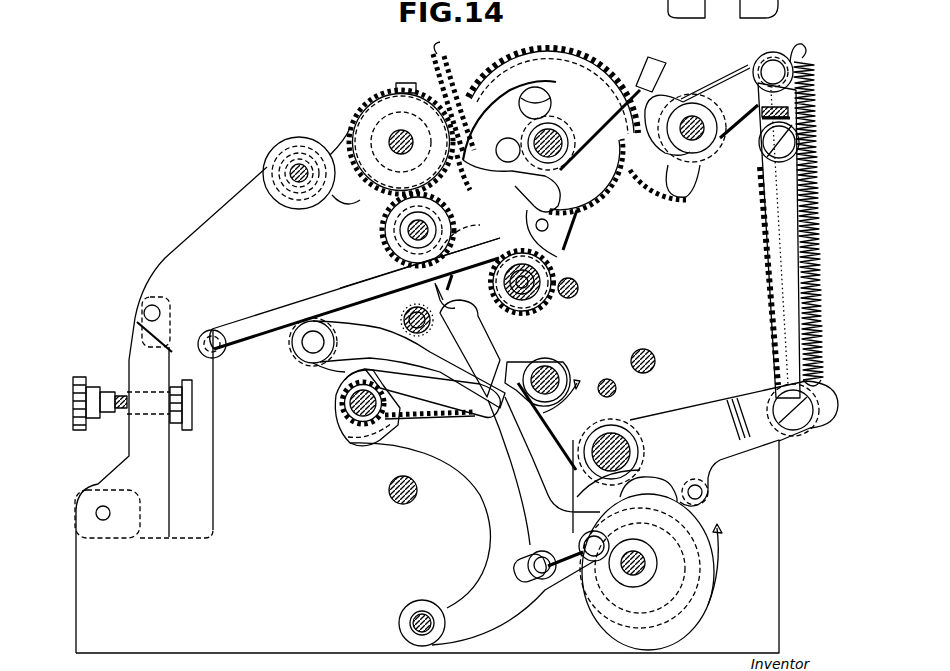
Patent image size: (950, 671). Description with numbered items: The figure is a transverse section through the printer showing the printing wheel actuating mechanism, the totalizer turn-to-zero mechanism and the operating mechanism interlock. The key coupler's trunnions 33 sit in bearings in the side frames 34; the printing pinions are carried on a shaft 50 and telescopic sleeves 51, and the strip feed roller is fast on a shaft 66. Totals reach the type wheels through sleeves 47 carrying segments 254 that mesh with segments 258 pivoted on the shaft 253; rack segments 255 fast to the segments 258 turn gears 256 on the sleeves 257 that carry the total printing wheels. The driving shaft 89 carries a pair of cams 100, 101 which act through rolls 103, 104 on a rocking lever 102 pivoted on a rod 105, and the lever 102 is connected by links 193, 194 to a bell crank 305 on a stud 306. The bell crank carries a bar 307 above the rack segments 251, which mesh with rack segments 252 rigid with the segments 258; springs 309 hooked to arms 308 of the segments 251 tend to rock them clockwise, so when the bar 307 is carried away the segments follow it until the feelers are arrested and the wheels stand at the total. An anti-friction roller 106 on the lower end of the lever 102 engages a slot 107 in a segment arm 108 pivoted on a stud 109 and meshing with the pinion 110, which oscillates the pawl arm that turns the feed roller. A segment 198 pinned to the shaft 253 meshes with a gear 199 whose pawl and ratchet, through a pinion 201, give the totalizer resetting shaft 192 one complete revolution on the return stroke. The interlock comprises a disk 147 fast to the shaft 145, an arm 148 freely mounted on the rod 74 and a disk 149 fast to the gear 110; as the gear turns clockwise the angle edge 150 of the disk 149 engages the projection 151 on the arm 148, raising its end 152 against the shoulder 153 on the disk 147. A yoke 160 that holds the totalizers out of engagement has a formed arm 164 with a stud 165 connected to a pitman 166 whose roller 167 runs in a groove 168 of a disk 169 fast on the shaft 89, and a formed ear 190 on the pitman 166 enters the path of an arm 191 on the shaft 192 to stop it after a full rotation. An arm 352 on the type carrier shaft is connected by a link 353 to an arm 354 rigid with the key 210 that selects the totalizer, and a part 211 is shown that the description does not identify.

The trunnions 33 is at (390, 490).
The side frames 34 is at (210, 427).
The sleeves 47 is at (283, 161).
The shaft 50 is at (412, 308).
The telescopic sleeves 51 is at (405, 320).
The shaft 66 is at (345, 427).
The rod 74 is at (312, 343).
The driving shaft 89 is at (636, 580).
The cam 100 is at (703, 604).
The cam 101 is at (650, 490).
The rocking lever 102 is at (688, 400).
The roll 103 is at (594, 560).
The roll 104 is at (702, 492).
The rod 105 is at (618, 430).
The anti-friction roller 106 is at (533, 560).
The slot 107 is at (520, 577).
The segment arm 108 is at (493, 500).
The stud 109 is at (408, 622).
The pinion 110 is at (350, 403).
The shaft 145 is at (545, 365).
The disk 147 is at (562, 370).
The arm 148 is at (345, 318).
The disk 149 is at (345, 387).
The angle edge 150 is at (377, 373).
The projection 151 is at (418, 350).
The end 152 is at (492, 432).
The shoulder 153 is at (490, 378).
The yoke 160 is at (538, 103).
The formed arm 164 is at (498, 178).
The stud 165 is at (462, 175).
The pitman 166 is at (560, 440).
The antifriction roller 167 is at (603, 510).
The groove 168 is at (555, 608).
The disk 169 is at (680, 645).
The formed ear 190 is at (442, 314).
The arm 191 is at (448, 281).
The totalizer resetting shaft 192 is at (410, 225).
The link 193 is at (762, 270).
The link 194 is at (800, 135).
The segment 198 is at (596, 80).
The gear 199 is at (348, 133).
The pinion 201 is at (456, 215).
The key 210 is at (120, 385).
The bracket 211 is at (165, 495).
The rack segments 251 is at (688, 188).
The rack segments 252 is at (604, 205).
The shaft 253 is at (555, 130).
The segments 254 is at (430, 66).
The rack segments 255 is at (560, 250).
The gears 256 is at (556, 275).
The sleeves 257 is at (568, 298).
The segments 258 is at (500, 78).
The bell crank 305 is at (690, 83).
The stud 306 is at (698, 140).
The bar 307 is at (665, 68).
The arms 308 is at (778, 52).
The springs 309 is at (815, 185).
The arm 352 is at (443, 294).
The link 353 is at (308, 303).
The arm 354 is at (320, 373).